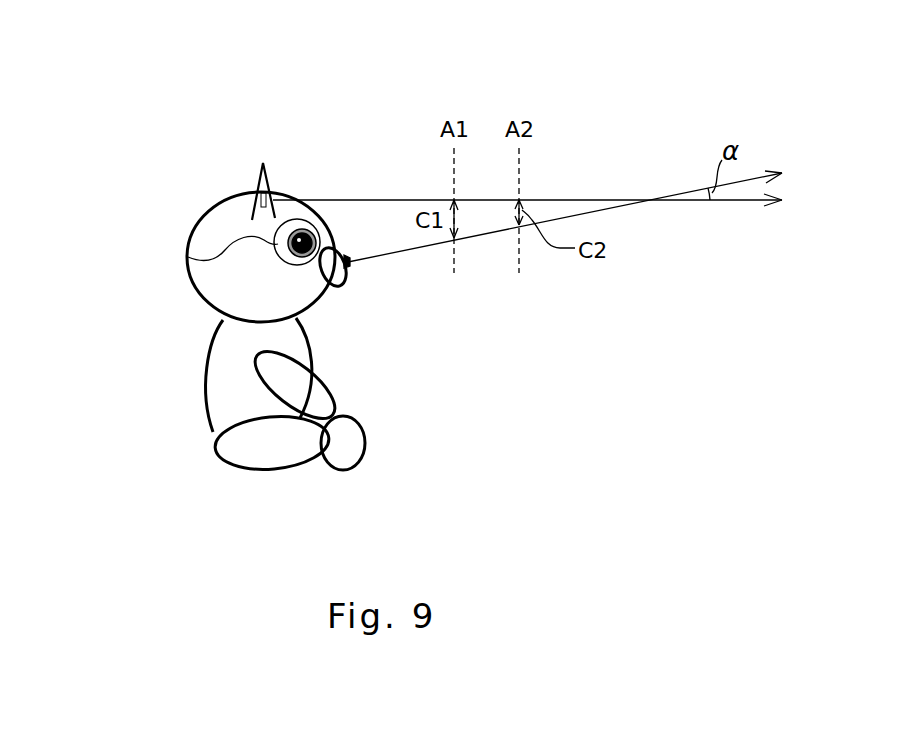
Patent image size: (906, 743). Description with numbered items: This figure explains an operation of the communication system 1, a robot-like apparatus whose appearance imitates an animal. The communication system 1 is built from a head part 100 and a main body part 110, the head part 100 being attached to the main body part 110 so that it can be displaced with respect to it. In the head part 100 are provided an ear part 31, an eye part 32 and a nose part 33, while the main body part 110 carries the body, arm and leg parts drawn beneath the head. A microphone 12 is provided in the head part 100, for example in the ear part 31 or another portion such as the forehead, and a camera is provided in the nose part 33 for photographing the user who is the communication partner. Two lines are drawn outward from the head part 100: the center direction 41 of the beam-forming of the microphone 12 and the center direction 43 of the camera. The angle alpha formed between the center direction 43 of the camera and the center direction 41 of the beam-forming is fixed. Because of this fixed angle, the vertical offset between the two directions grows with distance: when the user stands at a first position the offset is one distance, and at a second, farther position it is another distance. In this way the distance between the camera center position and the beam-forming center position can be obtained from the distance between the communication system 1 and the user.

The communication system 1 is at (165, 88).
The head part 100 is at (187, 190).
The main body part 110 is at (180, 340).
The microphone 12 is at (255, 172).
The ear part 31 is at (268, 181).
The eye part 32 is at (190, 258).
The nose part 33 is at (351, 266).
The center direction of the beam-forming 41 is at (377, 200).
The center direction of the camera 43 is at (380, 255).